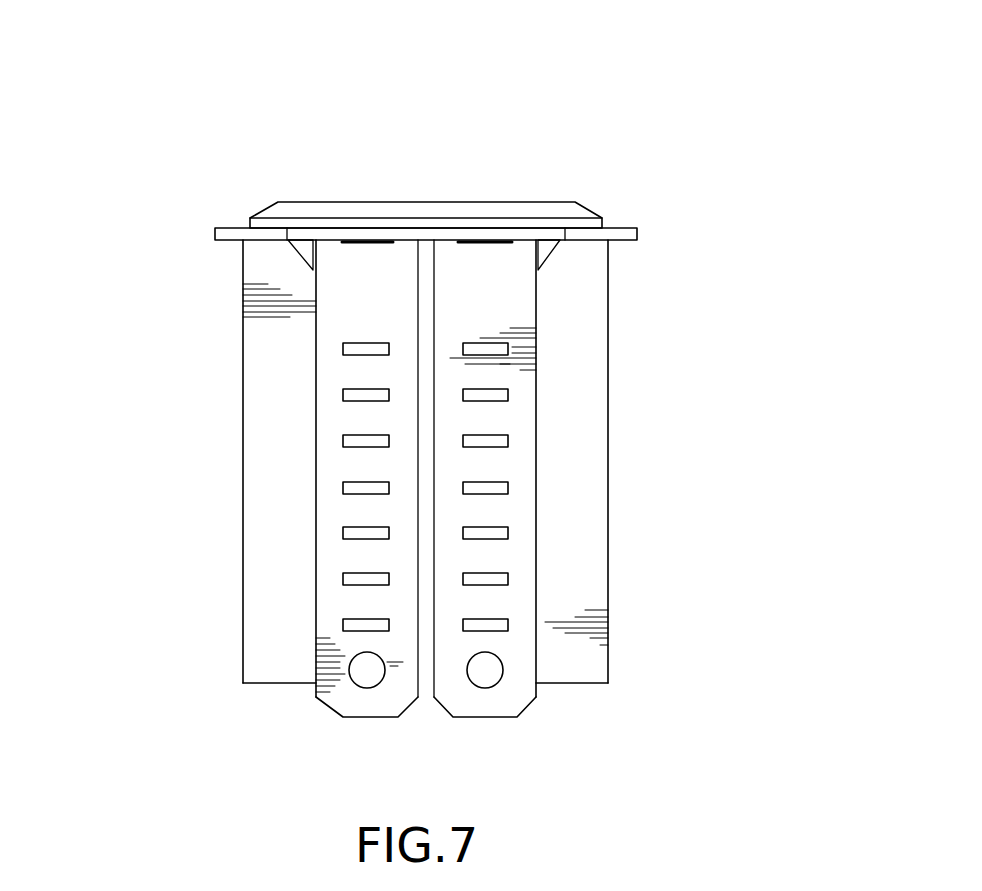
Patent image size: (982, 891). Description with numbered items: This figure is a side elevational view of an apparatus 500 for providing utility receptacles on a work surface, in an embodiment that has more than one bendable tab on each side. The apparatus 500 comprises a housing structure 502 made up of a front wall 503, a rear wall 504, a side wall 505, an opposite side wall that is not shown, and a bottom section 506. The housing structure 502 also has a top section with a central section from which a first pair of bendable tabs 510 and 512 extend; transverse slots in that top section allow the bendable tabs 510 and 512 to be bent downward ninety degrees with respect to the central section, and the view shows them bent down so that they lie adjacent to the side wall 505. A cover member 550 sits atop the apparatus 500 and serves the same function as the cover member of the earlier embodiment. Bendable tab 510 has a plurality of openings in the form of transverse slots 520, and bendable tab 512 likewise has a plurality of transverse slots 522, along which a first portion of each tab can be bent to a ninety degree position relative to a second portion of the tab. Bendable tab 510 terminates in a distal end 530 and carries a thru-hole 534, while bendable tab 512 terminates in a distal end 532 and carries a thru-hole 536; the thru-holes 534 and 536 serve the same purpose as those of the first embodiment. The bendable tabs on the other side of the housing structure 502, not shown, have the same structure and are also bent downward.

The apparatus 500 is at (108, 124).
The housing structure 502 is at (608, 397).
The front wall 503 is at (243, 573).
The rear wall 504 is at (608, 637).
The side wall 505 is at (562, 330).
The bottom section 506 is at (280, 684).
The bendable tab 510 is at (345, 508).
The bendable tab 512 is at (513, 507).
The transverse slots 520 is at (343, 349).
The transverse slots 522 is at (508, 441).
The distal end 530 is at (338, 710).
The distal end 532 is at (520, 717).
The thru-hole 534 is at (365, 684).
The thru-hole 536 is at (483, 684).
The cover member 550 is at (577, 210).